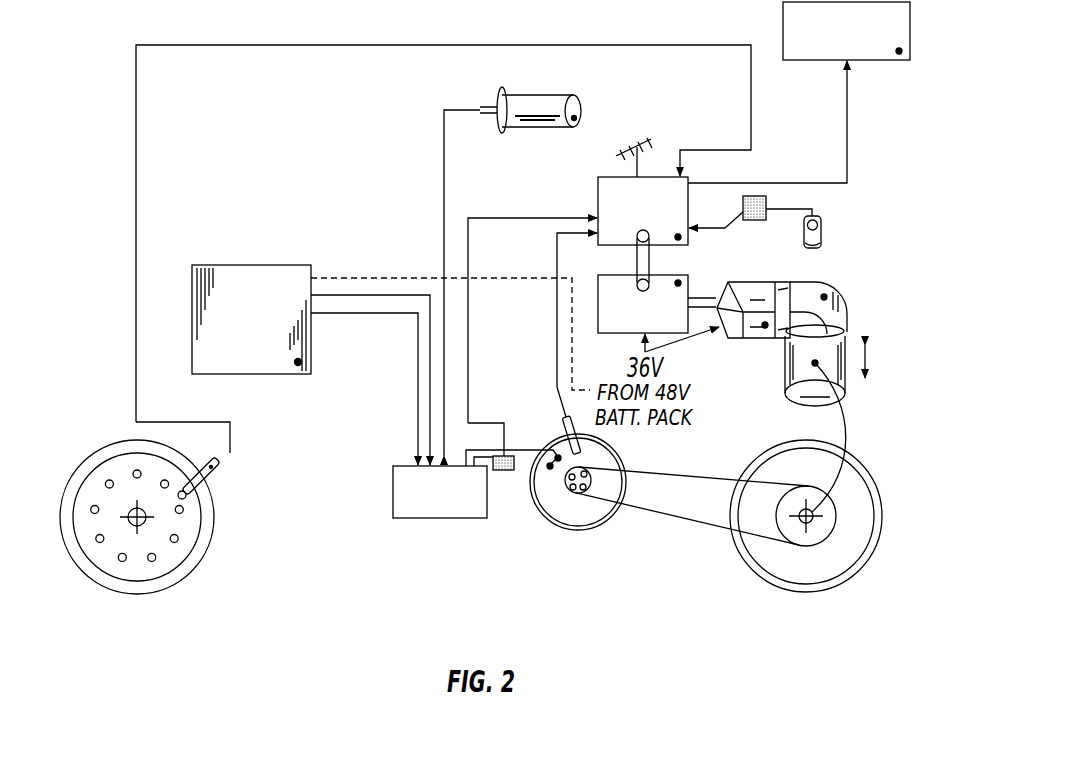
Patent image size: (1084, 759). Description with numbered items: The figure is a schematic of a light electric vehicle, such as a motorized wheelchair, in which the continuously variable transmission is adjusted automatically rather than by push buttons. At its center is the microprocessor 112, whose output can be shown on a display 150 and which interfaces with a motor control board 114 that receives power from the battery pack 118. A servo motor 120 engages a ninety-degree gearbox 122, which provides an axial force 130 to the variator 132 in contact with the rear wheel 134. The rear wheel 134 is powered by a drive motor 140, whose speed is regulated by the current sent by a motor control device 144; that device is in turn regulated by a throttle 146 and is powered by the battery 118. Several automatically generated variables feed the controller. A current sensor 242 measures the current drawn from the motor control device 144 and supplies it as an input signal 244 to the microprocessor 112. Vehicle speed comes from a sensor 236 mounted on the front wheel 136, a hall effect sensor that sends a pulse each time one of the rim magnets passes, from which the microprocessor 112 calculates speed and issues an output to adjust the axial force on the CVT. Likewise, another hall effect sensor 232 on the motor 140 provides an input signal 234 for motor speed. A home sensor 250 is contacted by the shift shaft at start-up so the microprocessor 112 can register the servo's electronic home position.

The microprocessor 112 is at (661, 216).
The motor control board 114 is at (661, 324).
The battery pack 118 is at (271, 334).
The servo motor 120 is at (745, 282).
The 90° gearbox 122 is at (845, 306).
The axial force 130 is at (868, 362).
The variator (CVT) 132 is at (830, 522).
The rear wheel 134 is at (830, 583).
The front wheel 136 is at (165, 582).
The drive motor 140 is at (583, 530).
The motor control device 144 is at (460, 504).
The throttle 146 is at (545, 96).
The display 150 is at (866, 44).
The hall effect sensor 232 is at (562, 422).
The input signal 234 is at (556, 242).
The sensor 236 is at (212, 474).
The current sensor 242 is at (504, 470).
The input signal 244 is at (505, 215).
The home sensor 250 is at (825, 232).